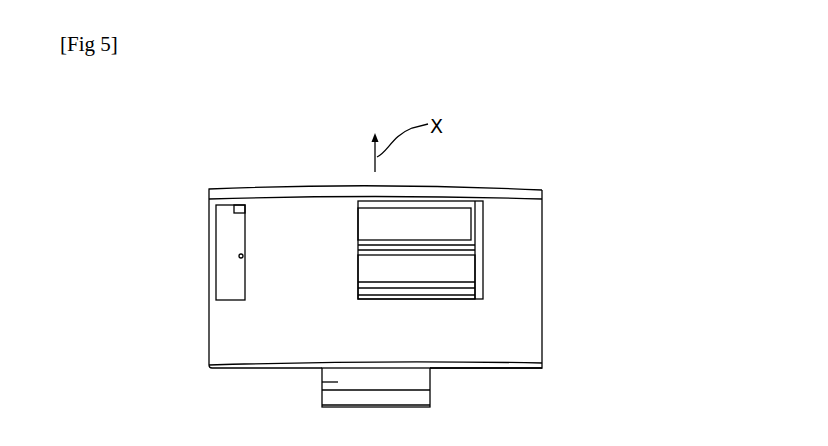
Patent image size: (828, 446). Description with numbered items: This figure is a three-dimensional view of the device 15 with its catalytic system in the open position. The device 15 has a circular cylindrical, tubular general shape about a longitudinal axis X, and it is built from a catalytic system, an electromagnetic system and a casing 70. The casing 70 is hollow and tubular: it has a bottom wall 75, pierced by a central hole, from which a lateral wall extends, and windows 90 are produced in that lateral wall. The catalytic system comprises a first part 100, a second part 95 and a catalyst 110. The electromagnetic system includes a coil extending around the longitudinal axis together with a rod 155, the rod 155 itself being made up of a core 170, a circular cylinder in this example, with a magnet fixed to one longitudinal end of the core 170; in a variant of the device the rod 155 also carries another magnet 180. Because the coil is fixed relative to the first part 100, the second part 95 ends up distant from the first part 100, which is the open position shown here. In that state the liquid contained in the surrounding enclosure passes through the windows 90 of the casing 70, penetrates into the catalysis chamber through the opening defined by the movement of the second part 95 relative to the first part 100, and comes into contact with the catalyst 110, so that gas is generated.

The device 15 is at (592, 291).
The casing 70 is at (515, 336).
The bottom wall 75 is at (508, 370).
The windows 90 is at (235, 233).
The second part 95 is at (450, 270).
The first part 100 is at (520, 196).
The catalyst 110 is at (450, 223).
The rod 155 is at (321, 384).
The core 170 is at (432, 381).
The another magnet 180 is at (432, 401).